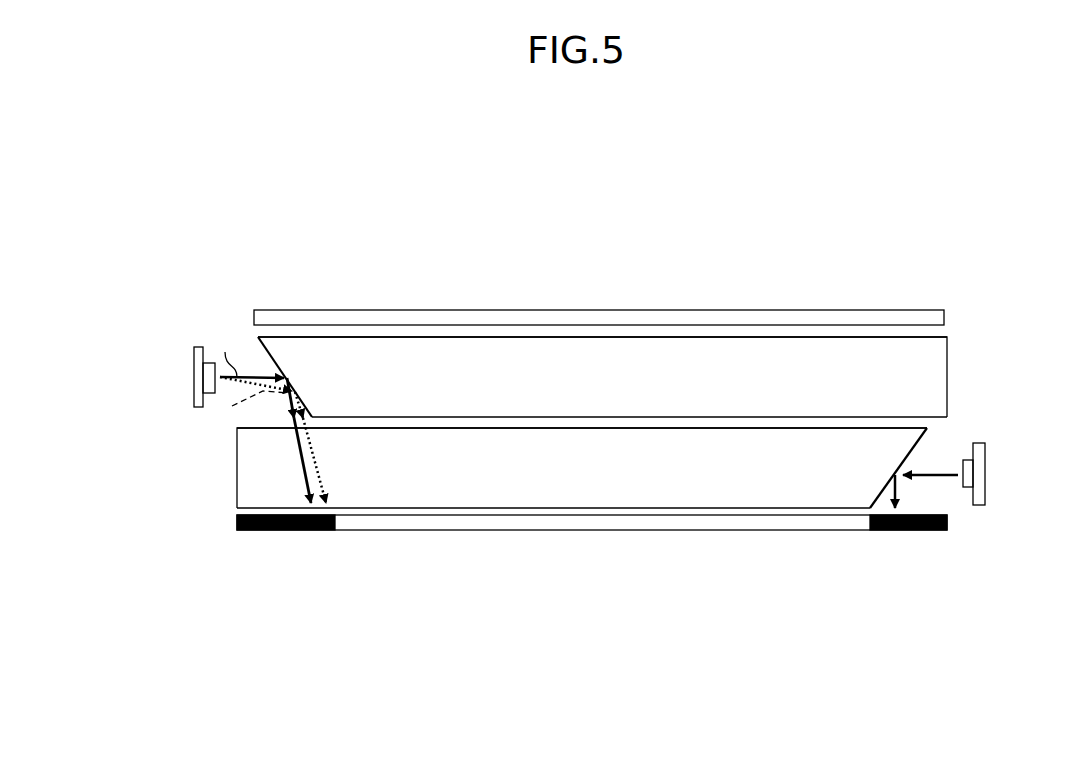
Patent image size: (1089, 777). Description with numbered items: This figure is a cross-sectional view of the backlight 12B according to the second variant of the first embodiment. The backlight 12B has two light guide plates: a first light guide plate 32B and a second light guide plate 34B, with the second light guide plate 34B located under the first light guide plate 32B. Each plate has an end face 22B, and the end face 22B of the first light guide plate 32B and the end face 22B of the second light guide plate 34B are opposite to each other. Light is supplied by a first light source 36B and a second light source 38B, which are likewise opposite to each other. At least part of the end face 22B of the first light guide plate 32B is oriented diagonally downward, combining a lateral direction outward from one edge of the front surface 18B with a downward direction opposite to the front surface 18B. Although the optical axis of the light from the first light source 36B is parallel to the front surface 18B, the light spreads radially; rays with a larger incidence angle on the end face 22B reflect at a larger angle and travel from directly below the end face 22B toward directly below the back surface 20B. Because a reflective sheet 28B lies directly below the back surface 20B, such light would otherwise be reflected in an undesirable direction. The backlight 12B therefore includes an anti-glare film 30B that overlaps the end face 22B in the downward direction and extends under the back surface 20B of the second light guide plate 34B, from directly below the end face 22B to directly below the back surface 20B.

The backlight 12B is at (980, 387).
The front surface 18B is at (375, 337).
The back surface 20B is at (407, 417).
The end face 22B is at (267, 357).
The reflective sheet 28B is at (733, 523).
The anti-glare film 30B is at (272, 532).
The first light guide plate 32B is at (443, 350).
The second light guide plate 34B is at (757, 448).
The first light source 36B is at (193, 382).
The second light source 38B is at (985, 472).